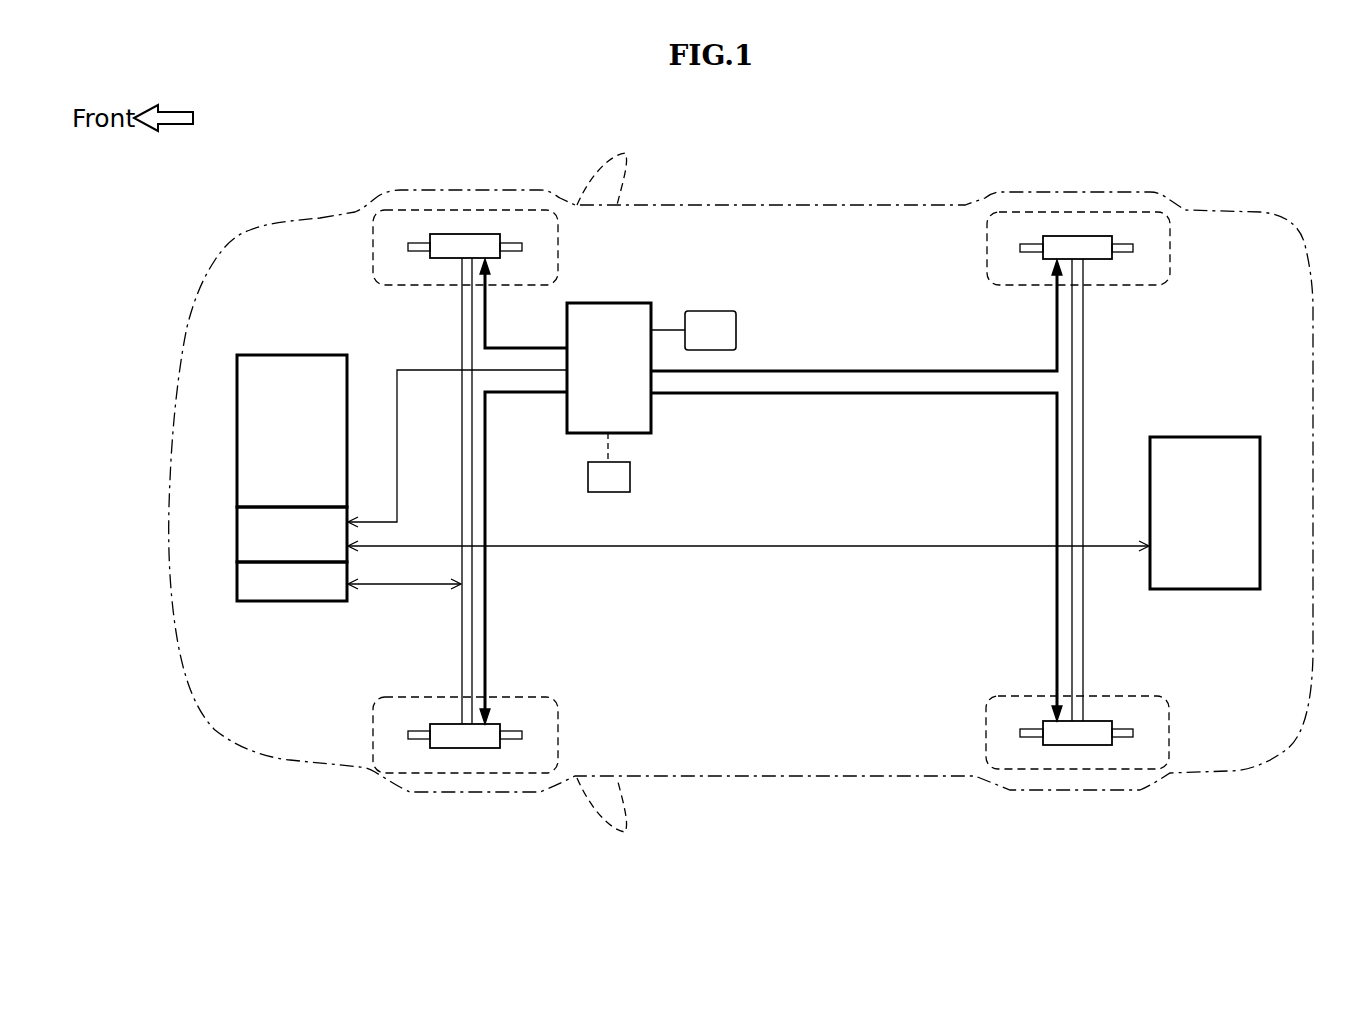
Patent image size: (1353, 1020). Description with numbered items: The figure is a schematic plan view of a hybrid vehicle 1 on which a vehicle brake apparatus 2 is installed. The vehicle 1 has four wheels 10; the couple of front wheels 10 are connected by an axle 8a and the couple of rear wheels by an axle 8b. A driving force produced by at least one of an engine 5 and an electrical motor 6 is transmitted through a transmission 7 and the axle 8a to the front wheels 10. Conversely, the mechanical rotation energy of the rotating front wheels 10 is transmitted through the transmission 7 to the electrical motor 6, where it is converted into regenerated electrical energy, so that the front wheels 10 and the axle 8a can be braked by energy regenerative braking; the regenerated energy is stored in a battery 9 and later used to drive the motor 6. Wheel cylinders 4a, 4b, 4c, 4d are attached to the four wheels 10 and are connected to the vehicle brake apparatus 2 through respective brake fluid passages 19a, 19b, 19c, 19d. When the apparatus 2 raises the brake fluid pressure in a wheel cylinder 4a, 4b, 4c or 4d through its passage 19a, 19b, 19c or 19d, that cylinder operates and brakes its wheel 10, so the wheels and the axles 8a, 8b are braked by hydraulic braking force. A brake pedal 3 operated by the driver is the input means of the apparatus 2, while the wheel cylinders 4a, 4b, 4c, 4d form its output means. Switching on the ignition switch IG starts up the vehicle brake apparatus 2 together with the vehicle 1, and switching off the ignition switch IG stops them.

The vehicle 1 is at (1045, 118).
The vehicle brake apparatus 2 is at (612, 303).
The brake pedal 3 is at (736, 330).
The wheel cylinder 4a is at (445, 255).
The wheel cylinder 4b is at (445, 728).
The wheel cylinder 4c is at (1098, 255).
The wheel cylinder 4d is at (1096, 725).
The engine 5 is at (237, 425).
The electrical motor 6 is at (237, 536).
The transmission 7 is at (237, 582).
The axle 8a is at (460, 650).
The axle 8b is at (1085, 647).
The battery 9 is at (1205, 437).
The wheels 10 is at (440, 210).
The brake fluid passage 19a is at (490, 322).
The brake fluid passage 19b is at (490, 626).
The brake fluid passage 19c is at (1055, 318).
The brake fluid passage 19d is at (1055, 622).
The ignition switch IG is at (630, 478).